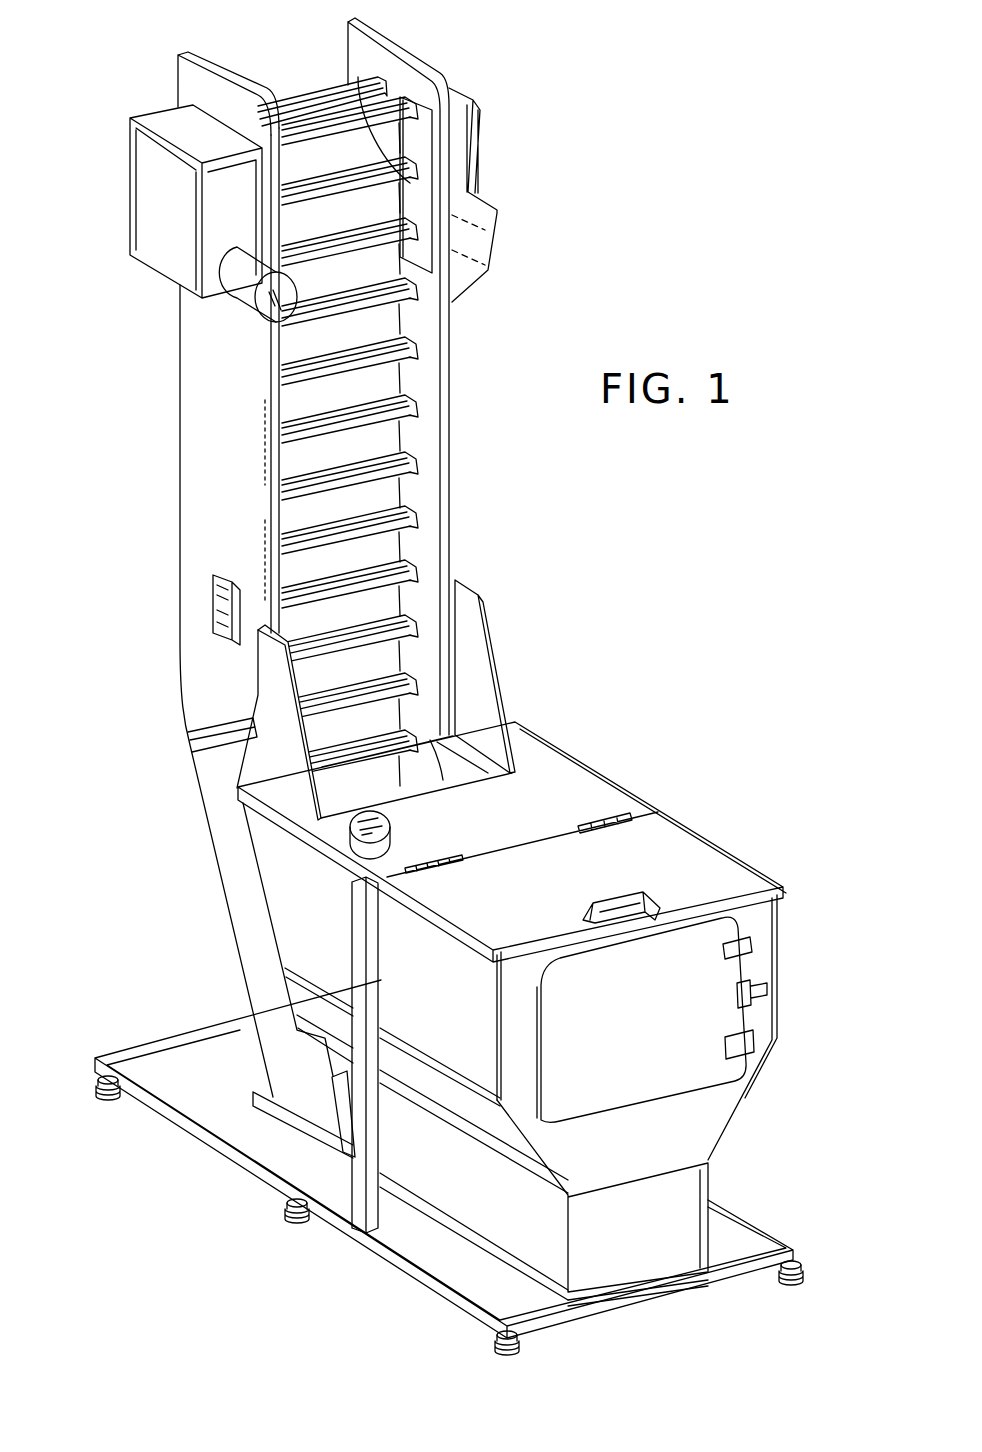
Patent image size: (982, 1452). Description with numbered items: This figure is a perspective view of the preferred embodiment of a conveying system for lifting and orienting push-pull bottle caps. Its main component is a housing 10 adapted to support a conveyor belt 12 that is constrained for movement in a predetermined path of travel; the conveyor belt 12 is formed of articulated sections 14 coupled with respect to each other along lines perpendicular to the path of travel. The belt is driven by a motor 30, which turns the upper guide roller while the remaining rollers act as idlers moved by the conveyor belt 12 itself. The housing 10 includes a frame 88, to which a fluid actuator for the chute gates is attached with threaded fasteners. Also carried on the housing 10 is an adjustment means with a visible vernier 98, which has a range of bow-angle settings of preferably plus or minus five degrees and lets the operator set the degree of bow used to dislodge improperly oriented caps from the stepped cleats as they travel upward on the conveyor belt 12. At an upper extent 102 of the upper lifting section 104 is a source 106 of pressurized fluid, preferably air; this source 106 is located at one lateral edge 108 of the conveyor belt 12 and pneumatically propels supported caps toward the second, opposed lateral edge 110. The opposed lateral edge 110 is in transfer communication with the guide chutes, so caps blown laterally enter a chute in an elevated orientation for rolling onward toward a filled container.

The housing 10 is at (180, 458).
The conveyor belt 12 is at (388, 548).
The articulated sections 14 is at (372, 462).
The motor 30 is at (128, 213).
The frame 88 is at (453, 333).
The vernier 98 is at (210, 604).
The upper extent 102 is at (128, 182).
The upper lifting section 104 is at (298, 90).
The source of pressurized fluid 106 is at (257, 313).
The lateral edge 108 is at (263, 97).
The opposed lateral edge 110 is at (410, 180).